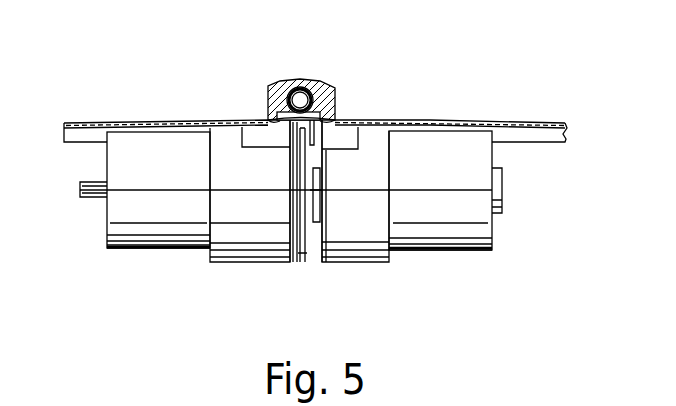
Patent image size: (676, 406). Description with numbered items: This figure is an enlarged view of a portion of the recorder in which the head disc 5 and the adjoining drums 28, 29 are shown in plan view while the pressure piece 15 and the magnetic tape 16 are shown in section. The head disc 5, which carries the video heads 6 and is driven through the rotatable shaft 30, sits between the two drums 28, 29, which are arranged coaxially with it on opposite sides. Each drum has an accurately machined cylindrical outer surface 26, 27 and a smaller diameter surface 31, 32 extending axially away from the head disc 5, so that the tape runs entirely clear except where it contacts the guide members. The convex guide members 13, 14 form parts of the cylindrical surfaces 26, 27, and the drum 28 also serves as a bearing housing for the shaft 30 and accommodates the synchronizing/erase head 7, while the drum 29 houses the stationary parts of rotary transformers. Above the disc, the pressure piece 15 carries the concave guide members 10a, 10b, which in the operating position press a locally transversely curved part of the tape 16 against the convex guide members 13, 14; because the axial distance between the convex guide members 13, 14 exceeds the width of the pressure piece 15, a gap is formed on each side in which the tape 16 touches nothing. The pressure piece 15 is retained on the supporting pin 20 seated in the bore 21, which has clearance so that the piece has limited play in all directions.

The head disc 5 is at (322, 218).
The video heads 6 is at (305, 255).
The synchronizing/erase head 7 is at (293, 233).
The concave guide member 10a is at (388, 120).
The concave guide member 10b is at (268, 116).
The convex guide member 13 is at (225, 135).
The convex guide member 14 is at (380, 132).
The pressure piece 15 is at (328, 86).
The magnetic tape 16 is at (520, 123).
The supporting pin 20 is at (297, 98).
The bore 21 is at (327, 92).
The cylindrical outer surface 26 is at (240, 217).
The cylindrical outer surface 27 is at (363, 232).
The drum 28 is at (110, 257).
The drum 29 is at (485, 258).
The rotatable shaft 30 is at (92, 190).
The smaller diameter surface 31 is at (160, 228).
The smaller diameter surface 32 is at (448, 228).